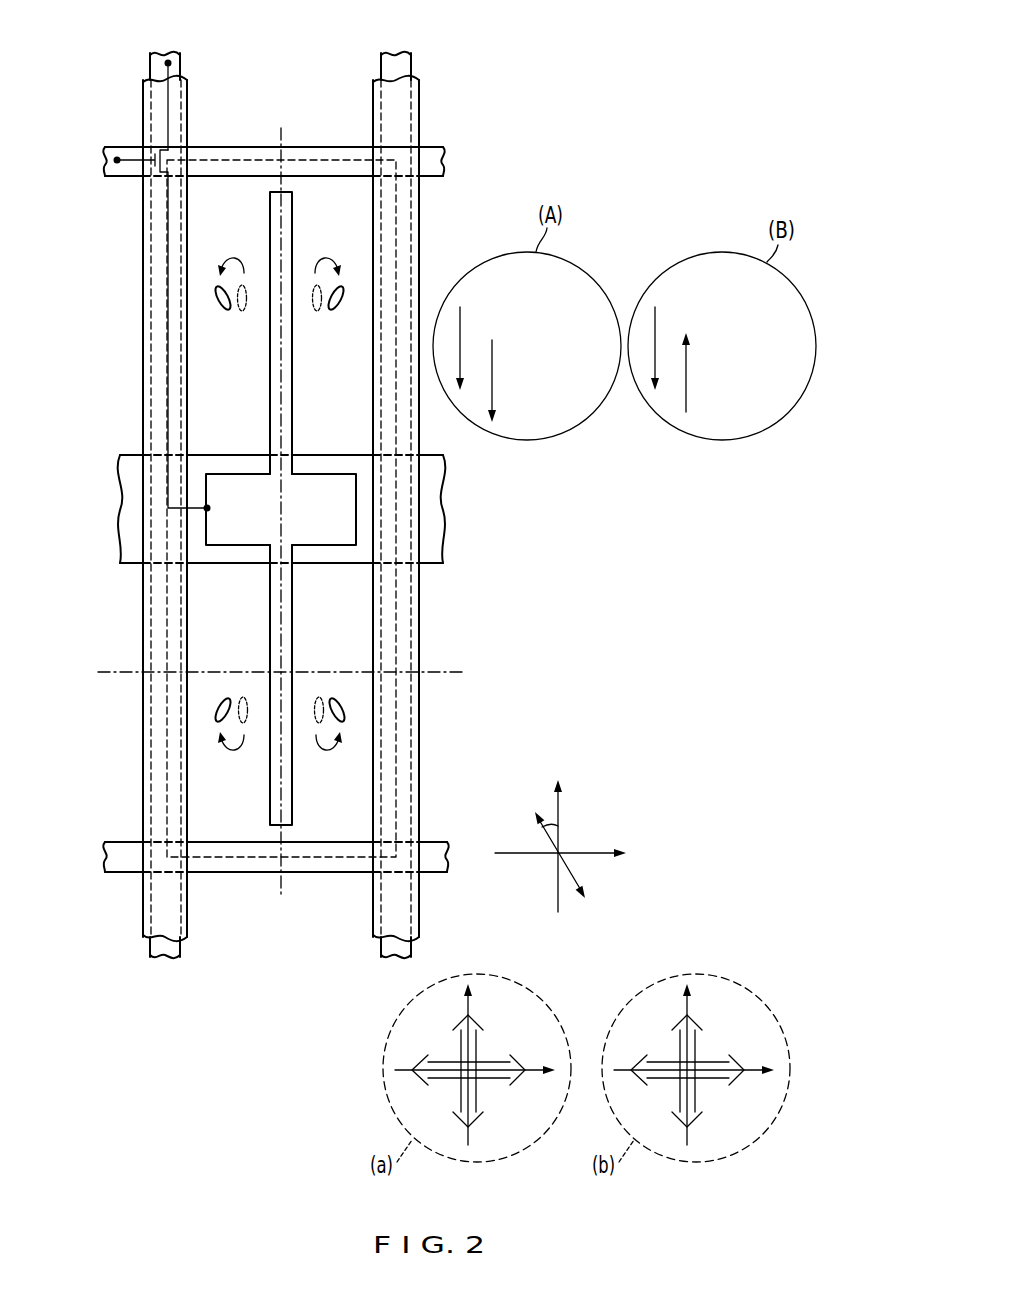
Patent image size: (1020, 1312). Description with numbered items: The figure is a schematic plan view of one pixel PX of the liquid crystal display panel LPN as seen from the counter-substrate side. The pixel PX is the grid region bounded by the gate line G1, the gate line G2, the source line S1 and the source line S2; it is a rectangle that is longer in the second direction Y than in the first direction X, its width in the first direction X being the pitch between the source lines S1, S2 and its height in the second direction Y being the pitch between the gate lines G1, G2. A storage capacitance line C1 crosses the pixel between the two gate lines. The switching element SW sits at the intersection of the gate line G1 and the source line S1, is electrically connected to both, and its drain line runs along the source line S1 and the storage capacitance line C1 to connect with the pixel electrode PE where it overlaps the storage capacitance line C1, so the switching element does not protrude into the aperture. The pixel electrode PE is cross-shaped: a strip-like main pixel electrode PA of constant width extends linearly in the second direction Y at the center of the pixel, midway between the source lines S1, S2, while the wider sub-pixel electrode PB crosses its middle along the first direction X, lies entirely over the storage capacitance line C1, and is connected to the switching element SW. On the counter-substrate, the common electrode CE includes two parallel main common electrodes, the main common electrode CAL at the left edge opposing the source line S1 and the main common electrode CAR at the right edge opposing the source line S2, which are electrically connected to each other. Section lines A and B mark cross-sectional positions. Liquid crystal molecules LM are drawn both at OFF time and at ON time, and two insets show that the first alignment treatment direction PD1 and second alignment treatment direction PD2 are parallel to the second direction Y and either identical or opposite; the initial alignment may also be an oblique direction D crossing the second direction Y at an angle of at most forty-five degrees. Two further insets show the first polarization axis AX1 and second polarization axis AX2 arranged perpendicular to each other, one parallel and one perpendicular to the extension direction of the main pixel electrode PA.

The liquid crystal display panel LPN is at (427, 504).
The pixel PX is at (427, 504).
The source line S1 is at (155, 52).
The source line S2 is at (397, 52).
The gate line G1 is at (108, 160).
The gate line G2 is at (105, 856).
The storage capacitance line C1 is at (120, 514).
The switching element SW is at (155, 183).
The pixel electrode PE is at (339, 508).
The main pixel electrode PA is at (284, 343).
The sub-pixel electrode PB is at (242, 482).
The common electrode CE is at (368, 903).
The main common electrode CAL is at (143, 772).
The main common electrode CAR is at (419, 630).
The line A- A is at (281, 672).
The line B- B is at (281, 514).
The liquid crystal molecules LM is at (517, 504).
The first alignment treatment direction PD1 is at (460, 314).
The second alignment treatment direction PD2 is at (492, 353).
The initial alignment direction D is at (533, 807).
The first direction X is at (592, 961).
The second direction Y is at (586, 950).
The first polarization axis AX1 is at (500, 1080).
The second polarization axis AX2 is at (478, 1035).